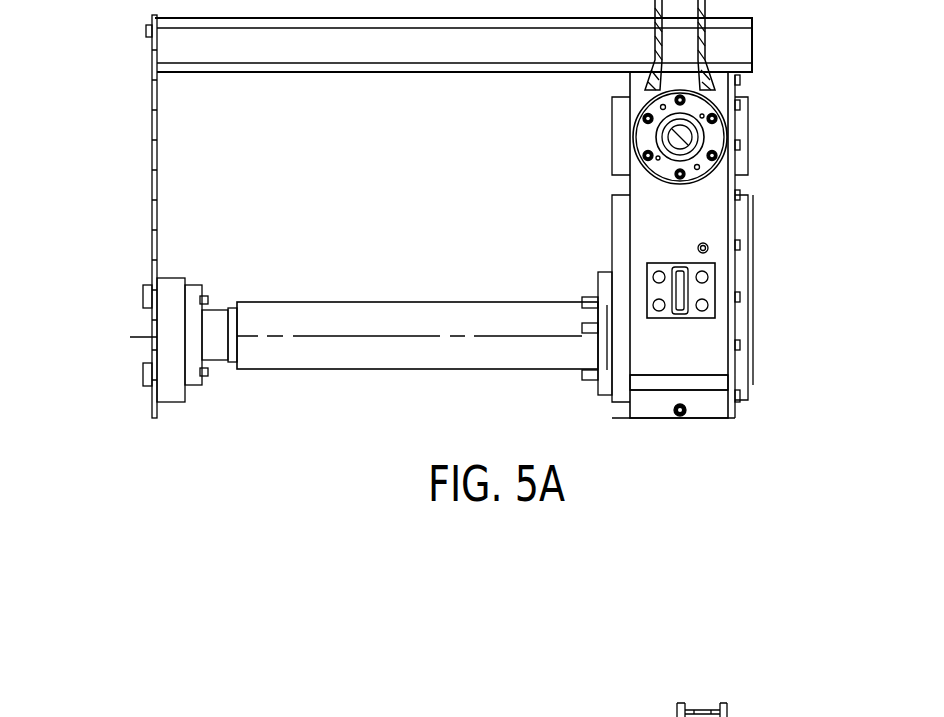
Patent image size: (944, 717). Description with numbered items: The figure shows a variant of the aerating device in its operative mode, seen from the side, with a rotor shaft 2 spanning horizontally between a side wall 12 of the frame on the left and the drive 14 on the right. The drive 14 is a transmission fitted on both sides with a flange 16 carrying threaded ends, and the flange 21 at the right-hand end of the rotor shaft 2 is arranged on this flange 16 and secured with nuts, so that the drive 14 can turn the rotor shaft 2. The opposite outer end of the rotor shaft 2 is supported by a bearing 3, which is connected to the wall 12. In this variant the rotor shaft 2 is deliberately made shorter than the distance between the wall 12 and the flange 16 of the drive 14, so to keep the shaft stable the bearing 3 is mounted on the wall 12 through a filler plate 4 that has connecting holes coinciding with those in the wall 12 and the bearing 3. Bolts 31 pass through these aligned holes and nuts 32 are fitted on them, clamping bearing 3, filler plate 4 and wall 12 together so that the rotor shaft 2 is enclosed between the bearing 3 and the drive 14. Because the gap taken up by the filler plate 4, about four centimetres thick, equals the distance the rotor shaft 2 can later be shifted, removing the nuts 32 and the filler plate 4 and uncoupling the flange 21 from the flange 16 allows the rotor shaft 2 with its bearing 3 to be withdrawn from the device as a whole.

The rotor shaft 2 is at (475, 278).
The bearing 3 is at (221, 306).
The filler plate 4 is at (171, 370).
The side wall 12 is at (152, 165).
The drive 14 is at (700, 210).
The flange 16 is at (623, 397).
The flange 21 is at (598, 383).
The bolts 31 is at (143, 292).
The nuts 32 is at (208, 298).